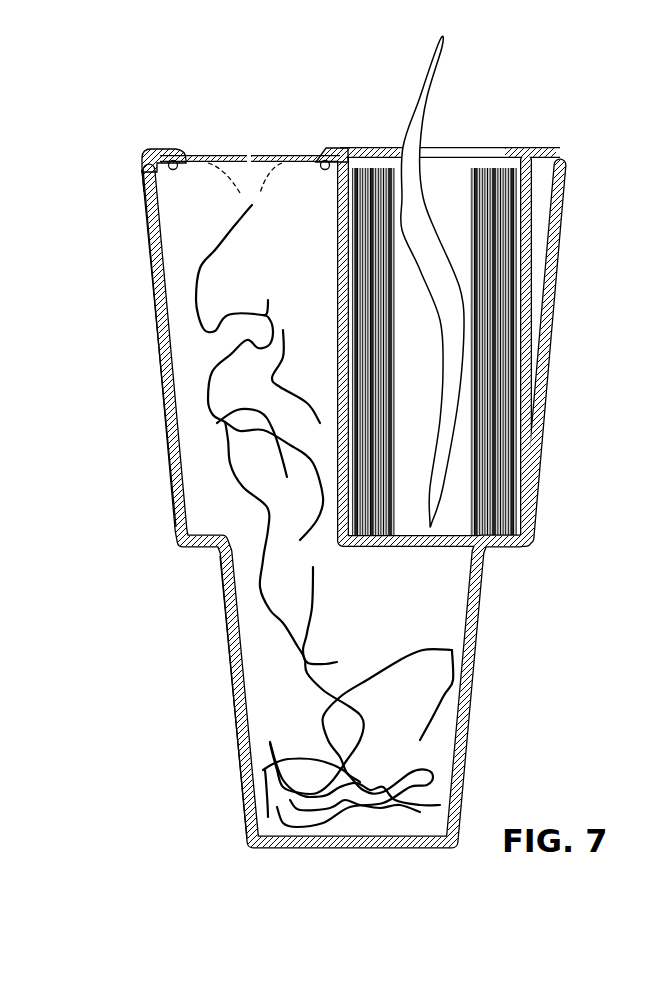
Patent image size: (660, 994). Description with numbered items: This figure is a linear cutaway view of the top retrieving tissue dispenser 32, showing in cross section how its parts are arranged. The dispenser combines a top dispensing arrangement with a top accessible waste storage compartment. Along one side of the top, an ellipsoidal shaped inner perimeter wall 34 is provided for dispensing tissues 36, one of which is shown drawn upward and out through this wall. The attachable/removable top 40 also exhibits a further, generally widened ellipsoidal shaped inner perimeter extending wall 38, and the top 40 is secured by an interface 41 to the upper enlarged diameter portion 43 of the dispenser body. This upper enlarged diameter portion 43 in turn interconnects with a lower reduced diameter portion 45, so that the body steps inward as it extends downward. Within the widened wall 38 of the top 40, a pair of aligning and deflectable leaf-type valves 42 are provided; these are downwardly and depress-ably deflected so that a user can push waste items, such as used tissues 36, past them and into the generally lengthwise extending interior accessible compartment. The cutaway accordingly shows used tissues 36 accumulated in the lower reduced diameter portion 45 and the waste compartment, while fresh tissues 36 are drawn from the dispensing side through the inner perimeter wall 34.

The tissue dispenser 32 is at (204, 683).
The ellipsoidal shaped inner perimeter wall 34 is at (388, 147).
The tissues 36 is at (423, 130).
The widened ellipsoidal shaped inner perimeter extending wall 38 is at (187, 153).
The attachable/removable top 40 is at (345, 148).
The interface 41 is at (146, 180).
The deflectable leaf-type valves 42 is at (266, 157).
The upper enlarged diameter portion 43 is at (148, 267).
The lower reduced diameter portion 45 is at (222, 603).